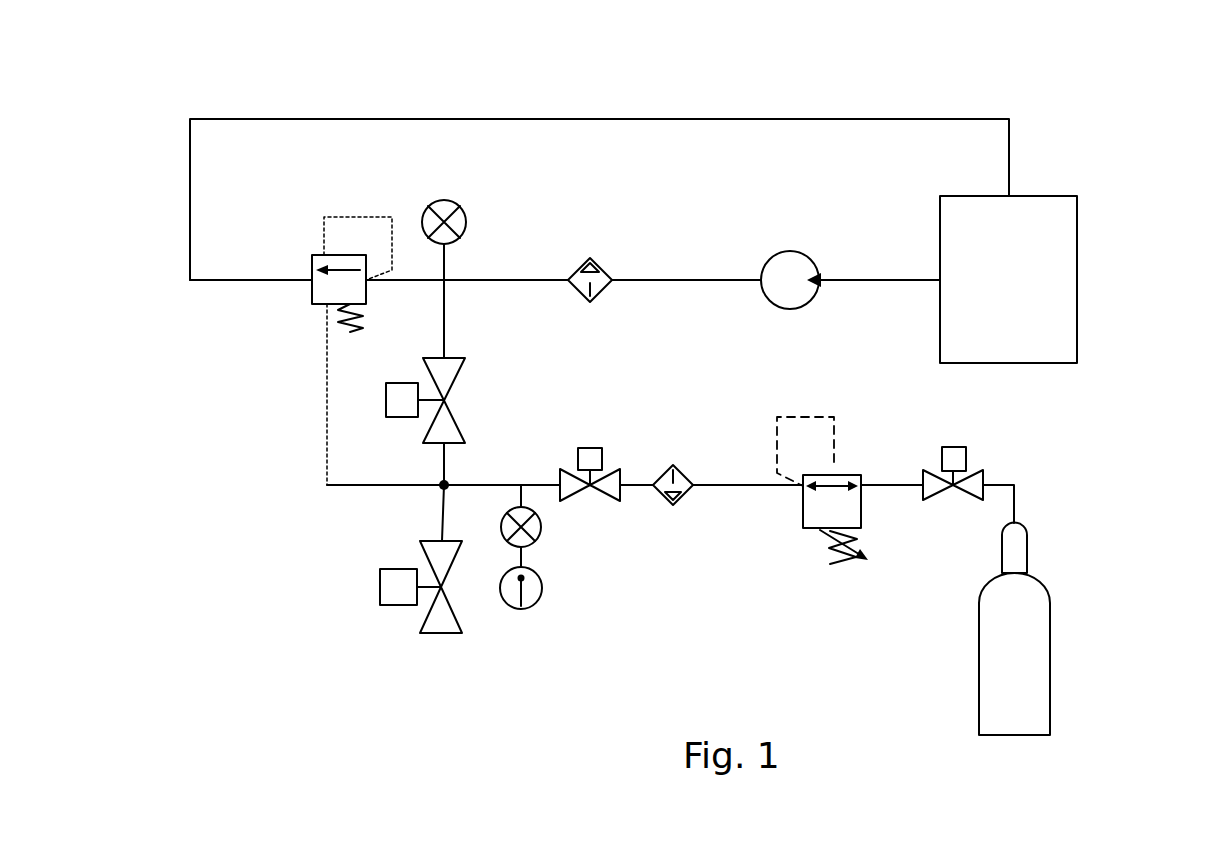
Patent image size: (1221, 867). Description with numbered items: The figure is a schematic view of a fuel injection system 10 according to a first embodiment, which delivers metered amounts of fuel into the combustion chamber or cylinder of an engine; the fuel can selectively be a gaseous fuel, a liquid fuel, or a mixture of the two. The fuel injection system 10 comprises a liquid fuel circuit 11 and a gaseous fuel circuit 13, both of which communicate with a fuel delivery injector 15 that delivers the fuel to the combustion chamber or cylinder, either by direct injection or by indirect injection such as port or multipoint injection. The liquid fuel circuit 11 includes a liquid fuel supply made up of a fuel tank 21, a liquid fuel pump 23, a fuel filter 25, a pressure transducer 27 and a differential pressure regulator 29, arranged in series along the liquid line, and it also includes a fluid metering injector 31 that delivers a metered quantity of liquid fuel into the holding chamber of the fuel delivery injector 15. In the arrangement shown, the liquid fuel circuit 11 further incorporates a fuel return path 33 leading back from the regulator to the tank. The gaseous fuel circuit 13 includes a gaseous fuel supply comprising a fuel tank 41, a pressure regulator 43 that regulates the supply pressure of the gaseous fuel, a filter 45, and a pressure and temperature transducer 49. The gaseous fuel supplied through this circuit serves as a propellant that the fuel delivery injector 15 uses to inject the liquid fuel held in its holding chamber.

The fuel injection system 10 is at (166, 149).
The liquid fuel circuit 11 is at (1062, 147).
The gaseous fuel circuit 13 is at (1040, 481).
The fuel delivery injector 15 is at (462, 654).
The fuel tank 21 is at (1053, 327).
The liquid fuel pump 23 is at (787, 287).
The fuel filter 25 is at (600, 290).
The pressure transducer 27 is at (462, 221).
The differential pressure regulator 29 is at (322, 290).
The fluid metering injector 31 is at (445, 423).
The fuel return path 33 is at (833, 119).
The fuel tank 41 is at (1028, 687).
The pressure regulator 43 is at (817, 523).
The filter 45 is at (677, 481).
The pressure and temperature transducer 49 is at (533, 527).